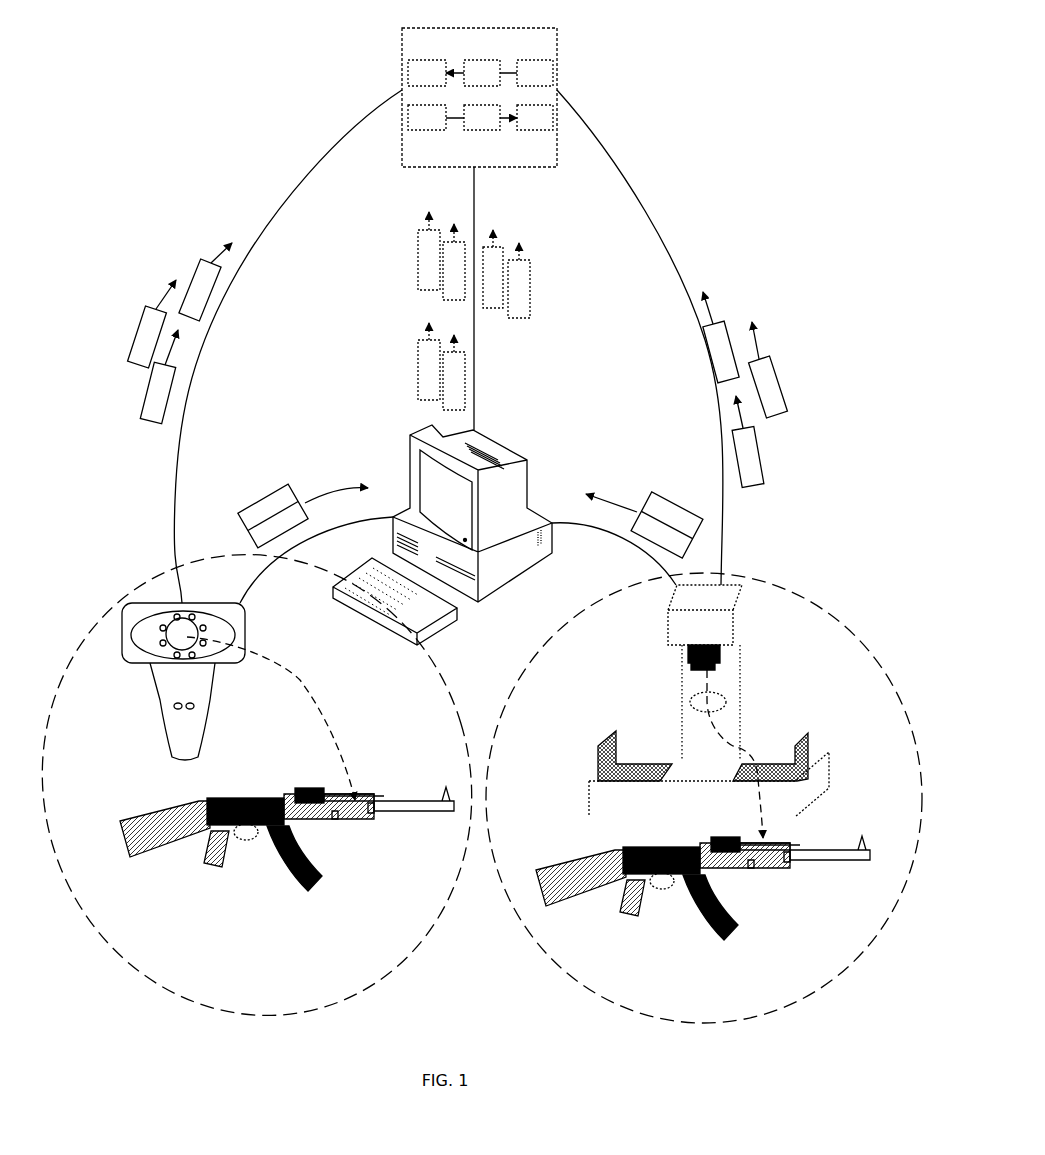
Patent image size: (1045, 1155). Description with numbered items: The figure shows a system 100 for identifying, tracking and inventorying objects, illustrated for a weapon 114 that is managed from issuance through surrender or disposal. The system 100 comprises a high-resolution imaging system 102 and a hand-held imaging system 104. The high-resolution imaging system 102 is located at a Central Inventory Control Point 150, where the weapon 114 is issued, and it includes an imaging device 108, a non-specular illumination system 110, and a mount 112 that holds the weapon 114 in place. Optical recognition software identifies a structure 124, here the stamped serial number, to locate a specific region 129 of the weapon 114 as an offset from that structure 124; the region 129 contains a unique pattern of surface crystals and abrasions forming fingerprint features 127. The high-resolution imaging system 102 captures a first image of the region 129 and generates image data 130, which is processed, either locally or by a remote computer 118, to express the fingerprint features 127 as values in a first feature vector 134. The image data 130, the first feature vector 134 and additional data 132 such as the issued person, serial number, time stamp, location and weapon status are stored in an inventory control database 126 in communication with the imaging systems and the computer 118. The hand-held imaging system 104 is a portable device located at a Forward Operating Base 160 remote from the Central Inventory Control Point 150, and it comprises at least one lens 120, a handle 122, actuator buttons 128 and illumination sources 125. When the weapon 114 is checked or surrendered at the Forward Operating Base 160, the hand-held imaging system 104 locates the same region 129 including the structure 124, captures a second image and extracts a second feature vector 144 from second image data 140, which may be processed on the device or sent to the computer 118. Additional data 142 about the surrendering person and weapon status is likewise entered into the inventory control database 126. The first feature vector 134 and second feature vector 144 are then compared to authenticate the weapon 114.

The system 100 is at (764, 158).
The high-resolution imaging (HRI) system 102 is at (690, 636).
The hand-held imaging (HHI) system 104 is at (170, 687).
The imaging device 108 is at (717, 660).
The non-specular illumination system 110 is at (727, 698).
The mount 112 is at (692, 810).
The weapon 114 is at (495, 863).
The remote computer 118 is at (490, 557).
The lens 120 is at (195, 630).
The handle 122 is at (210, 675).
The structure 124 is at (784, 859).
The illumination source 125 is at (165, 625).
The inventory control database 126 is at (524, 164).
The fingerprint feature 127 is at (751, 865).
The actuator button 128 is at (200, 708).
The region 129 is at (781, 840).
The image data 130 is at (586, 304).
The additional data 132 is at (602, 309).
The first feature vector 134 is at (578, 230).
The second image data 140 is at (335, 322).
The additional data 142 is at (314, 326).
The second feature vector 144 is at (366, 257).
The Central Inventory Control Point (CICP) 150 is at (590, 633).
The Forward Operating Base (FOB) 160 is at (59, 702).